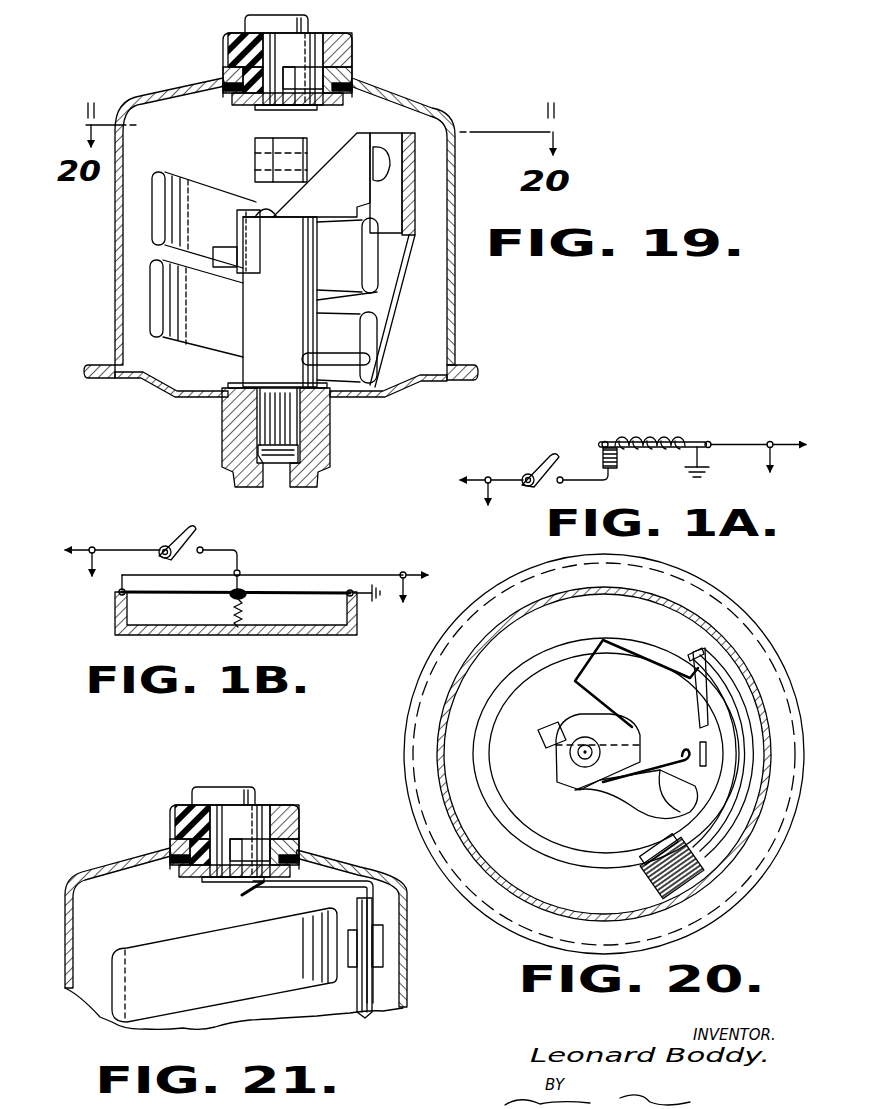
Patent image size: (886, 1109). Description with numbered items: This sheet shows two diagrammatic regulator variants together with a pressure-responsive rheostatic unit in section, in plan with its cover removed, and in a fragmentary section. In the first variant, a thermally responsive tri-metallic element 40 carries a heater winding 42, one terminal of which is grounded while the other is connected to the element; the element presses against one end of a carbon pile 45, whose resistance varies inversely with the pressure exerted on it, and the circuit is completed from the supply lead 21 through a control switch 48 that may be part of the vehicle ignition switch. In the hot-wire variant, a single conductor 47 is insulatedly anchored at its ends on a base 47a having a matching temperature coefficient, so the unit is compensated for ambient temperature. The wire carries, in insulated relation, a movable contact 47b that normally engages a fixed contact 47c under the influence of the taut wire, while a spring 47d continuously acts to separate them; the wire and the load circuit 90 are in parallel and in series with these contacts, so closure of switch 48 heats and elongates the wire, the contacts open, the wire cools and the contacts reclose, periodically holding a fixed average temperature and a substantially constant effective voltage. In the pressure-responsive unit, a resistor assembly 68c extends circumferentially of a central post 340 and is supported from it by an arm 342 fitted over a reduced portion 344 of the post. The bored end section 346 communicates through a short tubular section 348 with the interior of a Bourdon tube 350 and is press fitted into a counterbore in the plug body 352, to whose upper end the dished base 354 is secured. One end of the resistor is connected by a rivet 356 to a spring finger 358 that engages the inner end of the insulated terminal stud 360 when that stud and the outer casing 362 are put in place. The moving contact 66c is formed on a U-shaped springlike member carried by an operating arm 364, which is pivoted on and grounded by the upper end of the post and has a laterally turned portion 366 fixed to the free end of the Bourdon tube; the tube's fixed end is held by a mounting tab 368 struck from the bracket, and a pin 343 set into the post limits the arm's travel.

In FIG. 19, the insulated terminal stud 360 is at (332, 30).
In FIG. 21, the insulated terminal stud 360 is at (228, 787).
In FIG. 19, the outer casing 362 is at (460, 133).
In FIG. 20, the outer casing 362 is at (412, 728).
In FIG. 21, the outer casing 362 is at (407, 940).
In FIG. 19, the central post 340 is at (308, 275).
In FIG. 19, the Bourdon tube 350 is at (157, 302).
In FIG. 20, the Bourdon tube 350 is at (595, 862).
In FIG. 21, the Bourdon tube 350 is at (113, 1007).
In FIG. 19, the arm 342 is at (425, 287).
In FIG. 20, the arm 342 is at (618, 805).
In FIG. 21, the arm 342 is at (390, 1005).
In FIG. 19, the mounting tab 368 is at (378, 330).
In FIG. 19, the short tubular section 348 is at (350, 356).
In FIG. 19, the dished base 354 is at (402, 392).
In FIG. 19, the reduced portion 344 is at (223, 428).
In FIG. 19, the end section 346 is at (290, 428).
In FIG. 19, the plug body 352 is at (322, 456).
In FIG. 1A, the heater winding 42 is at (638, 431).
In FIG. 1A, the thermally responsive tri-metallic element 40 is at (697, 440).
In FIG. 1A, the load circuit 90 is at (771, 441).
In FIG. 1B, the load circuit 90 is at (404, 572).
In FIG. 1A, the carbon pile 45 is at (618, 465).
In FIG. 1A, the input terminal 21 is at (489, 477).
In FIG. 1B, the input terminal 21 is at (93, 547).
In FIG. 1A, the control switch 48 is at (537, 487).
In FIG. 1B, the control switch 48 is at (193, 544).
In FIG. 1B, the single conductor 47 is at (290, 600).
In FIG. 1B, the base 47a is at (338, 630).
In FIG. 1B, the movable contact 47b is at (246, 578).
In FIG. 1B, the fixed contact 47c is at (240, 568).
In FIG. 1B, the spring 47d is at (232, 625).
In FIG. 20, the moving contact 66c is at (593, 706).
In FIG. 20, the resistor assembly 68c is at (722, 805).
In FIG. 20, the operating arm 364 is at (590, 718).
In FIG. 20, the laterally turned portion 366 is at (636, 711).
In FIG. 20, the pin 343 is at (545, 736).
In FIG. 20, the rivet 356 is at (690, 895).
In FIG. 21, the spring finger 358 is at (322, 882).